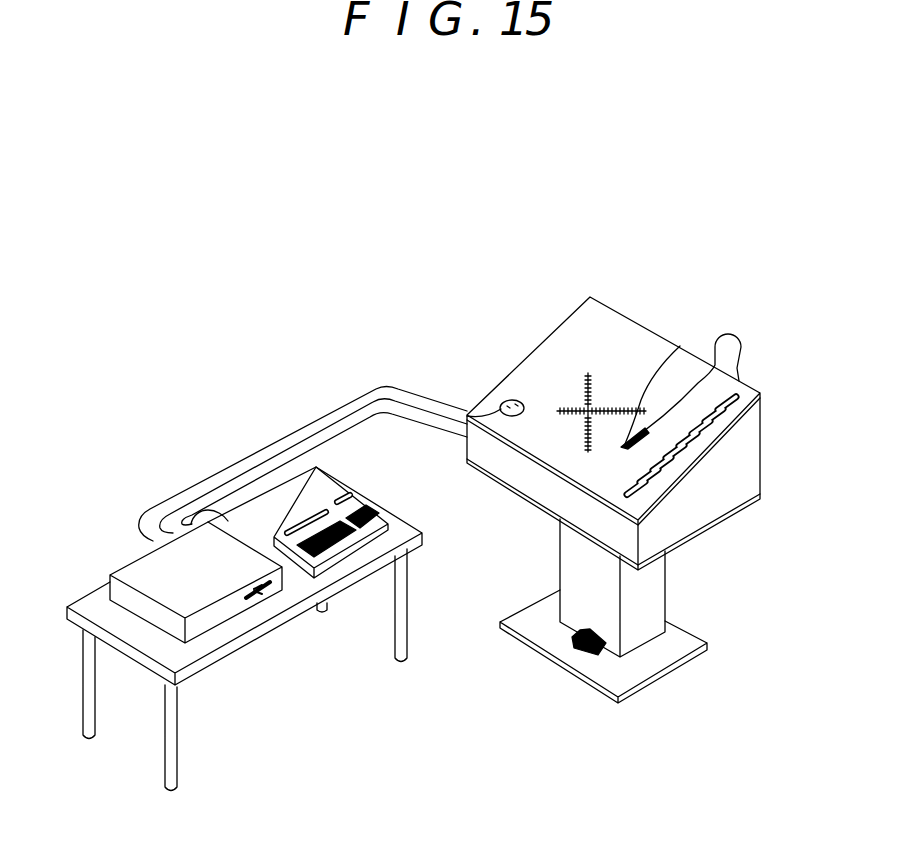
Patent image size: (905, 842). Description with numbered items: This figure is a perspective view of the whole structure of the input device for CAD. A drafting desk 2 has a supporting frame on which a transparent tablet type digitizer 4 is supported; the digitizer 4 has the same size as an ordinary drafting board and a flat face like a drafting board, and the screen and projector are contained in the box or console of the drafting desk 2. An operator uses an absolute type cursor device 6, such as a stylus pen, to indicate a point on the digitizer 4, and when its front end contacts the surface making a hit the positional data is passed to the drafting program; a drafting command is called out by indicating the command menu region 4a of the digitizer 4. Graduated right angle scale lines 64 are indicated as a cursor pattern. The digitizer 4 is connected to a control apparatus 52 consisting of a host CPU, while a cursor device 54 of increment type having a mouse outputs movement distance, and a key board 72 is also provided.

The drafting desk 2 is at (657, 595).
The transparent tablet type digitizer 4 is at (622, 335).
The command menu region 4a is at (694, 437).
The absolute type cursor device 6 is at (680, 346).
The control apparatus 52 is at (147, 570).
The cursor device 54 is at (511, 400).
The right angle scale lines 64 is at (583, 397).
The key board 72 is at (355, 503).